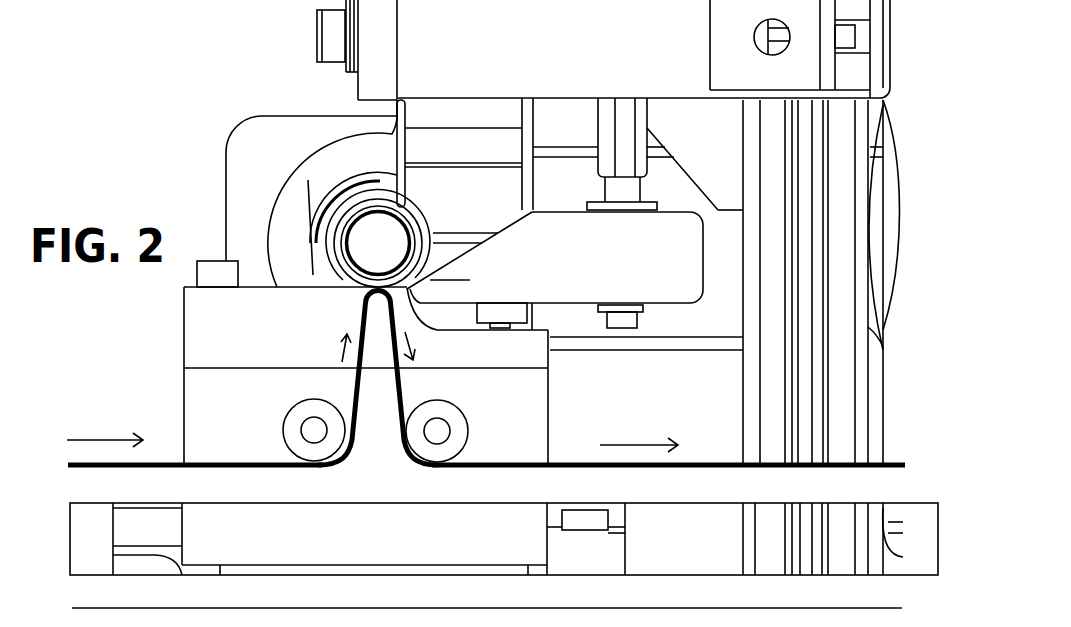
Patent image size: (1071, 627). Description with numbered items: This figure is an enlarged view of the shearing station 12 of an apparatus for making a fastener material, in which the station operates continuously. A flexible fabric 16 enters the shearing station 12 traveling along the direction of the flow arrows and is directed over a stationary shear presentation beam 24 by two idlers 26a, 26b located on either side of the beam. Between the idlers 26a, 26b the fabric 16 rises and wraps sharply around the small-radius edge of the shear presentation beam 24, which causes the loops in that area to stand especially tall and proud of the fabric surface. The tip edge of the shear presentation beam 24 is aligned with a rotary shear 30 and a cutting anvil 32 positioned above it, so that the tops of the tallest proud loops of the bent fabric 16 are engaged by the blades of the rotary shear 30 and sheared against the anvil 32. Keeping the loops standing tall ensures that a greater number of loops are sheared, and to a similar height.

The shearing station 12 is at (154, 129).
The flexible fabric 16 is at (163, 462).
The shear presentation beam 24 is at (374, 353).
The idler 26a is at (293, 430).
The idler 26b is at (450, 410).
The rotary shear 30 is at (394, 256).
The cutting anvil 32 is at (413, 288).